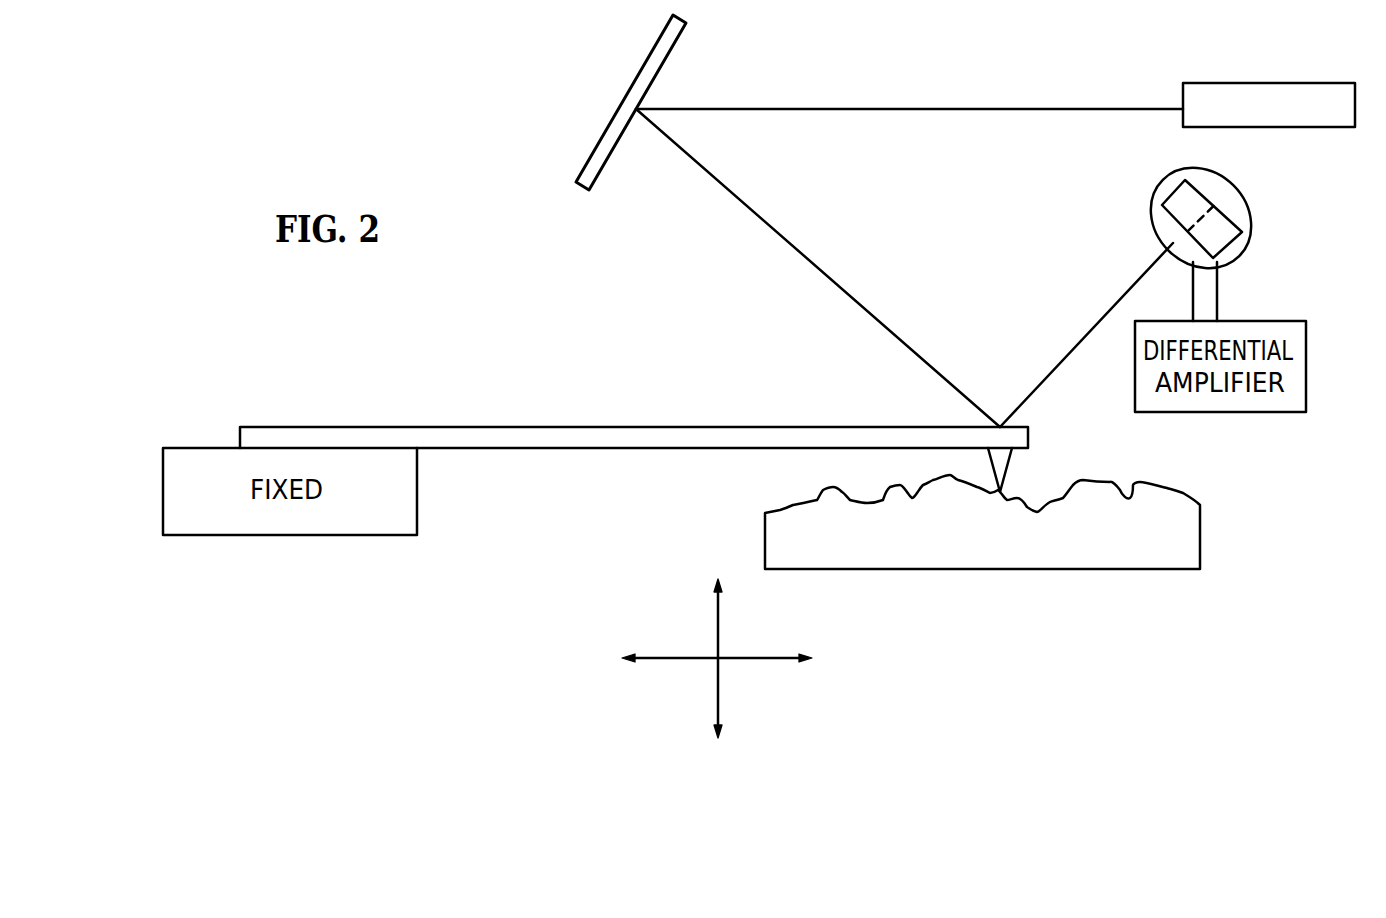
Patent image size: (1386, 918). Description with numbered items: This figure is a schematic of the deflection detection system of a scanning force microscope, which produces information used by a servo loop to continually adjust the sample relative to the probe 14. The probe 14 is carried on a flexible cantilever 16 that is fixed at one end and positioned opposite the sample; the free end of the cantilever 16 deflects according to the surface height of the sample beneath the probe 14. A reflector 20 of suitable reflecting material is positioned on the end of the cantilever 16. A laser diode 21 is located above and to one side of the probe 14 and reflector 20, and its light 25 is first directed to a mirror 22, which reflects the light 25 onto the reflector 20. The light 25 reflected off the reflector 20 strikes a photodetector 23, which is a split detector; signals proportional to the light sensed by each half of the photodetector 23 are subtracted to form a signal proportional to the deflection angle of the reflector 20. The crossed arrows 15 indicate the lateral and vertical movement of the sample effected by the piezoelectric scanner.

The probe 14 is at (1015, 473).
The lateral and vertical movement of the sample 15 is at (766, 640).
The flexible cantilever 16 is at (634, 397).
The reflector 20 is at (1025, 405).
The laser diode 21 is at (1302, 83).
The mirror 22 is at (694, 102).
The photodetector 23 is at (1169, 287).
The light 25 is at (909, 233).